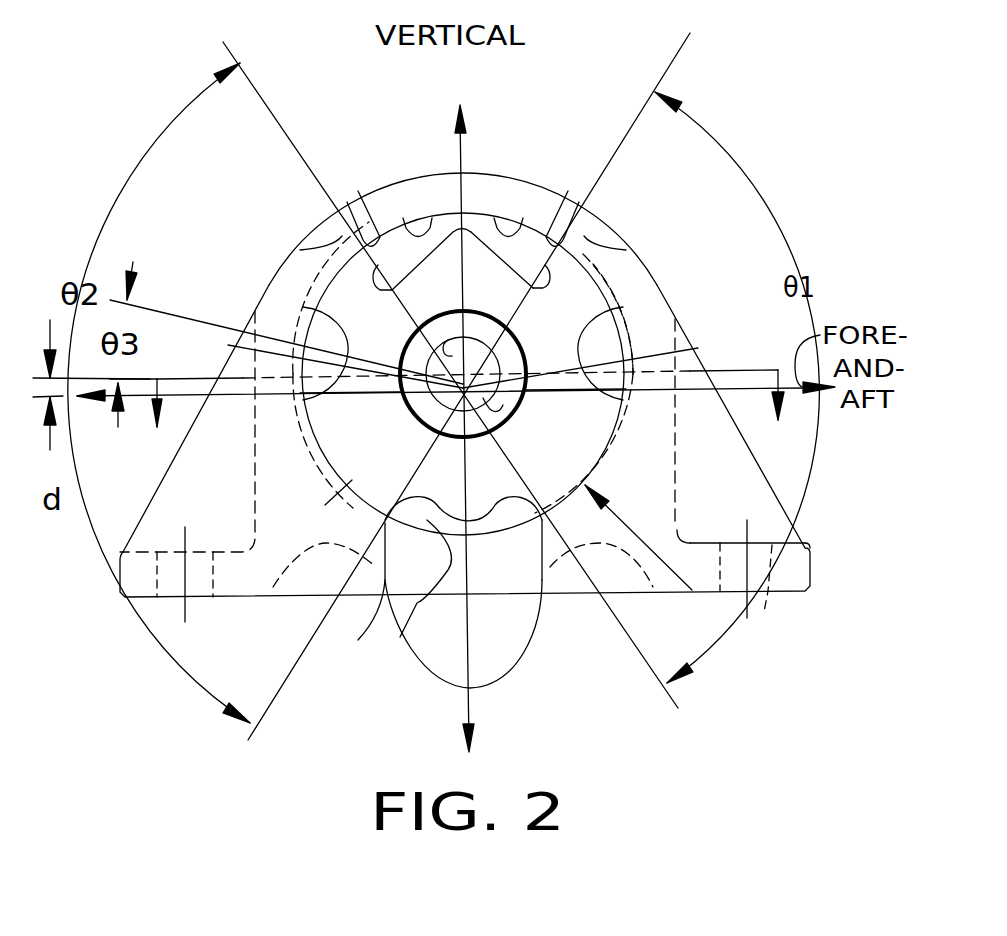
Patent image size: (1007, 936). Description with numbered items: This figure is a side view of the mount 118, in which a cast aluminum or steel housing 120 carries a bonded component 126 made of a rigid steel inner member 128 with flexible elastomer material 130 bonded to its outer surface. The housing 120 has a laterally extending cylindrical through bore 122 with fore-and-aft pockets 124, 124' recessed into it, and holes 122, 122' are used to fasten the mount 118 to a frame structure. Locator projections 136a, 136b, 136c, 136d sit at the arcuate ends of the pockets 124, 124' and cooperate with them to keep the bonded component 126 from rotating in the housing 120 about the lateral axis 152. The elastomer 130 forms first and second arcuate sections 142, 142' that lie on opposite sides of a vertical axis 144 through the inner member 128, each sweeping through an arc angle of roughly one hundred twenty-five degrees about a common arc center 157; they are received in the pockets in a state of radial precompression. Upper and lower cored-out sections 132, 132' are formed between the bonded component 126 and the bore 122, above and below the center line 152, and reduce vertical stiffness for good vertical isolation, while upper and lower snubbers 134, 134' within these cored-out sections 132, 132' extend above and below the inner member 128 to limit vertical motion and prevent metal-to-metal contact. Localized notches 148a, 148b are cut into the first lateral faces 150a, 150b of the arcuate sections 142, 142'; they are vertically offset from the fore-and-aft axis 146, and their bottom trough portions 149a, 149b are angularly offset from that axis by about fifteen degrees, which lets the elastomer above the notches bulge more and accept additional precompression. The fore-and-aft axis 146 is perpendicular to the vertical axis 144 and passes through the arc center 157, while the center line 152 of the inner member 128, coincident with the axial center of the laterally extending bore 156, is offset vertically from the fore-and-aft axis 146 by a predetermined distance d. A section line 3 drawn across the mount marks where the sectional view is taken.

The section line 3- 3 is at (469, 430).
The mount 118 is at (480, 150).
The housing 120 is at (415, 160).
The cylindrical through bore 122 is at (268, 410).
The hole 122' is at (682, 421).
The fore-and-aft pocket 124 is at (248, 404).
The fore-and-aft pocket 124' is at (639, 425).
The bonded component 126 is at (322, 248).
The inner member 128 is at (634, 118).
The elastomer material 130 is at (464, 375).
The upper cored-out section 132 is at (471, 202).
The lower cored-out section 132' is at (399, 598).
The upper snubber 134 is at (543, 190).
The lower snubber 134' is at (463, 543).
The locator projection 136a is at (588, 240).
The locator projection 136b is at (335, 193).
The locator projection 136c is at (543, 588).
The locator projection 136d is at (407, 570).
The first arcuate section 142 is at (599, 292).
The second arcuate section 142' is at (310, 511).
The vertical axis 144 is at (470, 637).
The fore-and-aft axis 146 is at (245, 376).
The localized notch 148a is at (600, 350).
The localized notch 148b is at (322, 342).
The bottom trough portion 149a is at (615, 356).
The bottom trough portion 149b is at (310, 357).
The first lateral face 150a is at (597, 422).
The first lateral face 150b is at (398, 423).
The lateral axis 152 is at (463, 388).
The laterally extending bore 156 is at (463, 388).
The arc center 157 is at (463, 388).